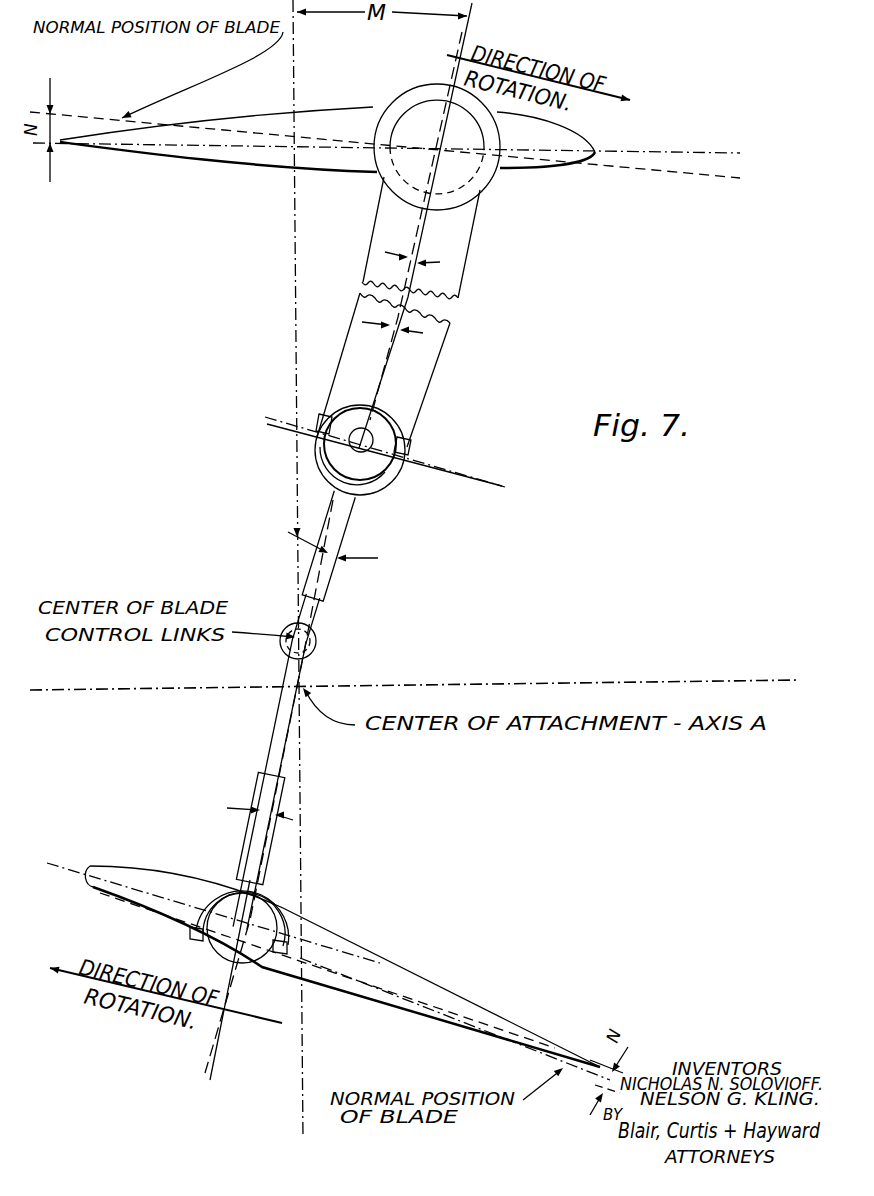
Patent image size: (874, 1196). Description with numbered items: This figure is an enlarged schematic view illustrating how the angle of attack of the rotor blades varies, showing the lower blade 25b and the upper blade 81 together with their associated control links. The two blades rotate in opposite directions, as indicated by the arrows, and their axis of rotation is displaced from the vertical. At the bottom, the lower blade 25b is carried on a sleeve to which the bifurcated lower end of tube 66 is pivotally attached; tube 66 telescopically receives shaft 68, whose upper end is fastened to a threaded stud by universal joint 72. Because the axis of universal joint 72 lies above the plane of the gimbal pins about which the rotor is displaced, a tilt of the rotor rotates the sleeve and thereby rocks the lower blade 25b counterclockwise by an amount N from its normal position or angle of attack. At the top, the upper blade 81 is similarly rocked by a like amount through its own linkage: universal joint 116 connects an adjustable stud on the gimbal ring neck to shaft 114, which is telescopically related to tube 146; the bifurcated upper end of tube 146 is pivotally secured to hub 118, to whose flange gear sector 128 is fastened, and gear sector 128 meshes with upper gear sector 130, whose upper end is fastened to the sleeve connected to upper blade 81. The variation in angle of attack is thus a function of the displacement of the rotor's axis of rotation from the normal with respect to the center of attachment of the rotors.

The upper rotor blade 81 is at (542, 168).
The upper gear sector 130 is at (468, 247).
The gear sector 128 is at (432, 377).
The hub 118 is at (392, 428).
The tube 146 is at (348, 528).
The shaft 114 is at (317, 617).
The universal joint 116 is at (295, 637).
The universal joint 72 is at (317, 647).
The shaft 68 is at (270, 740).
The tube 66 is at (263, 853).
The lower rotor blade 25b is at (363, 942).